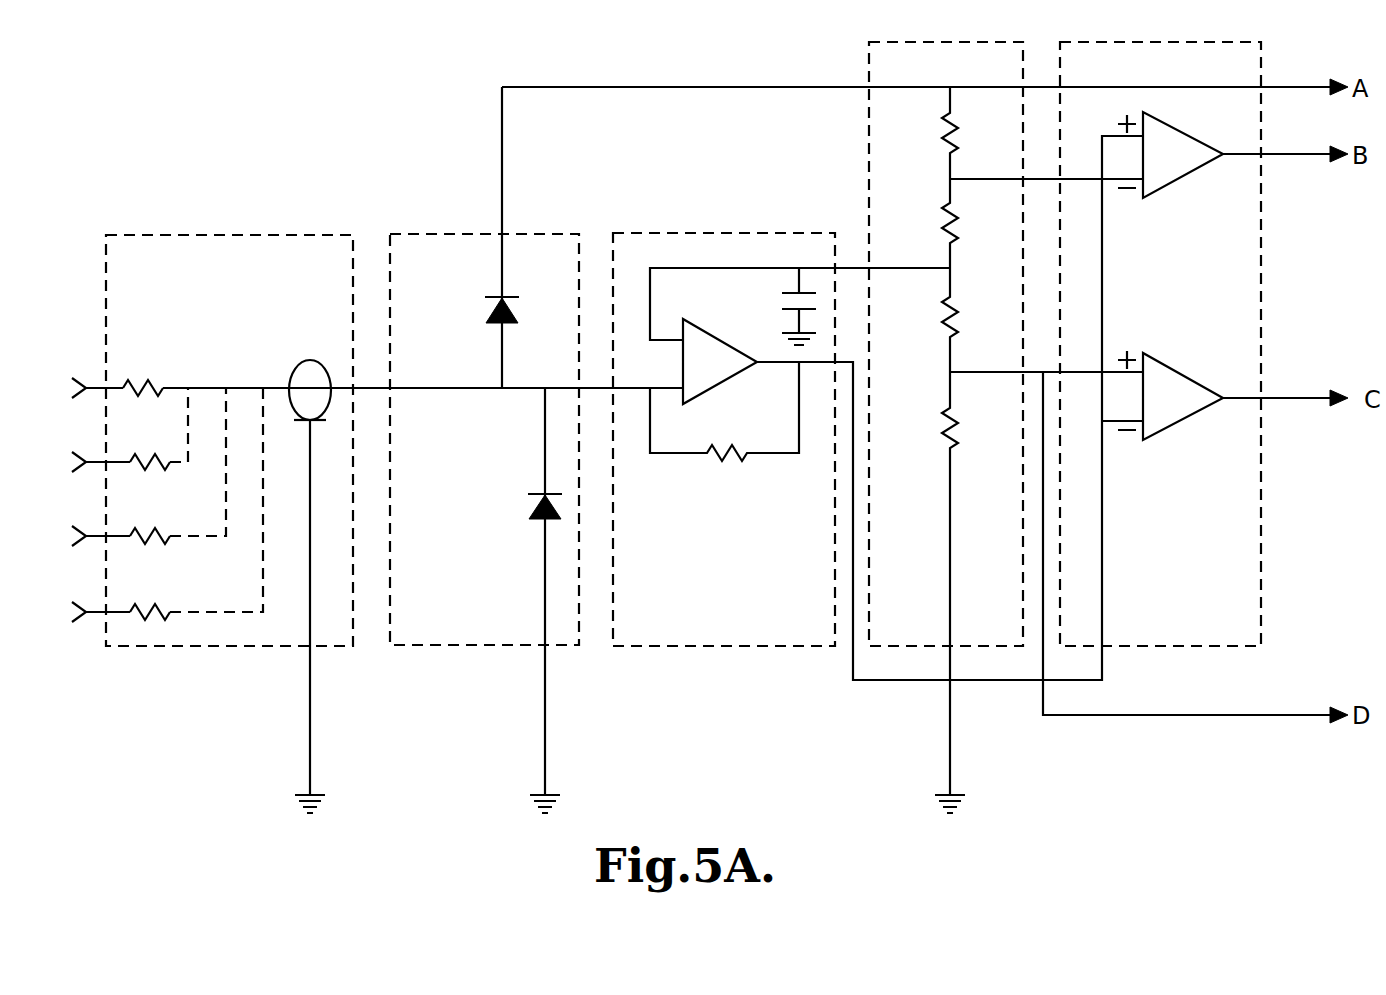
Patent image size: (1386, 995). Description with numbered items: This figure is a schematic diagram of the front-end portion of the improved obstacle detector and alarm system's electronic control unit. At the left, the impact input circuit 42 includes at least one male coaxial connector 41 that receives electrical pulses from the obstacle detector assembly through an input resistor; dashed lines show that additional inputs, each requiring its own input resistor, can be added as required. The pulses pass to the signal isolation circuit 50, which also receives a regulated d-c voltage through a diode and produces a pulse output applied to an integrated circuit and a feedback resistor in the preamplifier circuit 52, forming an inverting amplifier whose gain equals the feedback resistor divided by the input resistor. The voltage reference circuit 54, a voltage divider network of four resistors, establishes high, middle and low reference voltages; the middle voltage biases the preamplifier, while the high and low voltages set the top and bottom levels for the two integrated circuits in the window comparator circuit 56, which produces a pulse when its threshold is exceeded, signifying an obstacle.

The male coaxial connector 41 is at (86, 386).
The impact input circuit 42 is at (229, 440).
The signal isolation circuit 50 is at (484, 450).
The preamplifier circuit 52 is at (878, 408).
The voltage reference circuit 54 is at (1108, 427).
The window comparator circuit 56 is at (1204, 344).